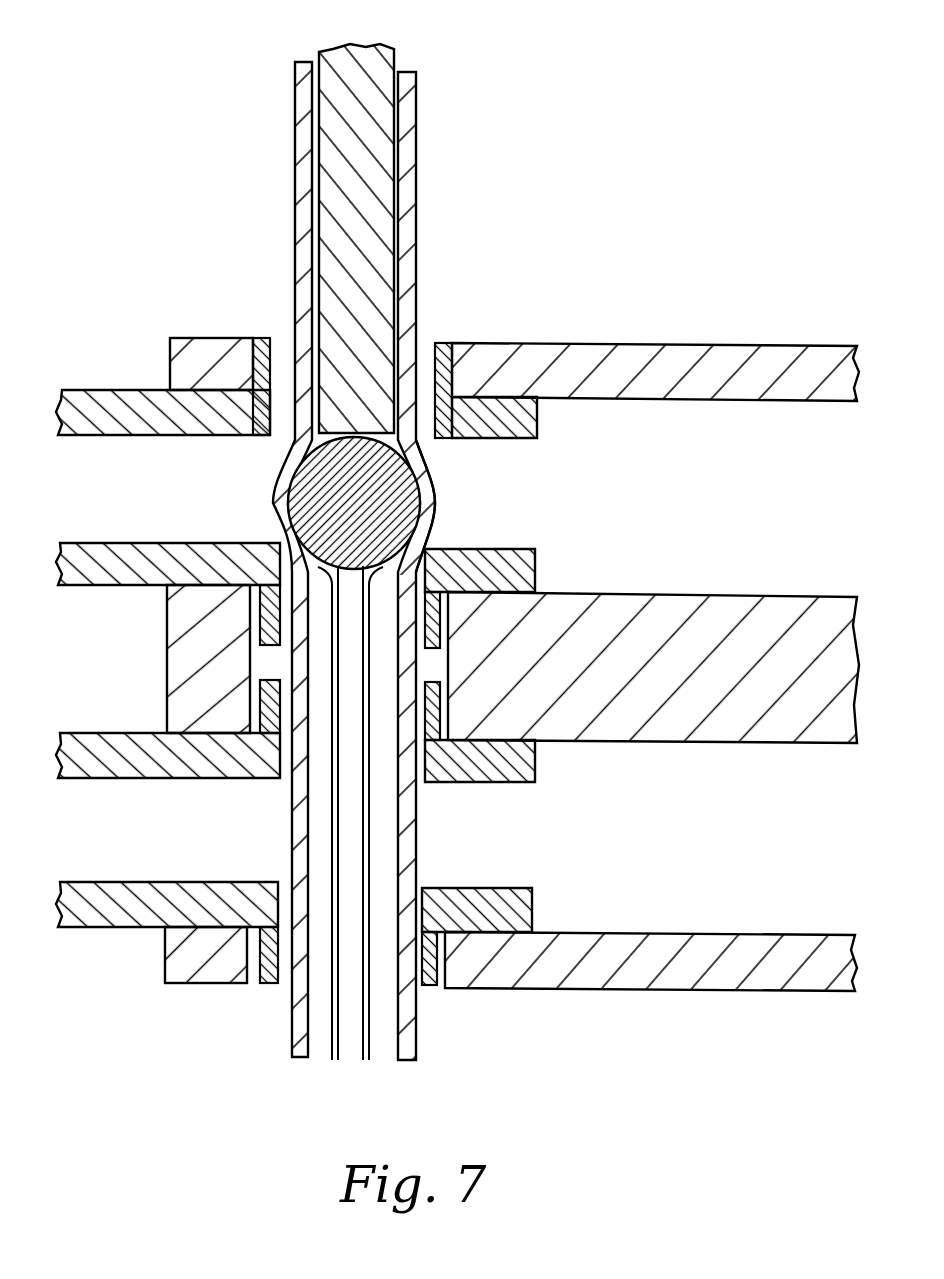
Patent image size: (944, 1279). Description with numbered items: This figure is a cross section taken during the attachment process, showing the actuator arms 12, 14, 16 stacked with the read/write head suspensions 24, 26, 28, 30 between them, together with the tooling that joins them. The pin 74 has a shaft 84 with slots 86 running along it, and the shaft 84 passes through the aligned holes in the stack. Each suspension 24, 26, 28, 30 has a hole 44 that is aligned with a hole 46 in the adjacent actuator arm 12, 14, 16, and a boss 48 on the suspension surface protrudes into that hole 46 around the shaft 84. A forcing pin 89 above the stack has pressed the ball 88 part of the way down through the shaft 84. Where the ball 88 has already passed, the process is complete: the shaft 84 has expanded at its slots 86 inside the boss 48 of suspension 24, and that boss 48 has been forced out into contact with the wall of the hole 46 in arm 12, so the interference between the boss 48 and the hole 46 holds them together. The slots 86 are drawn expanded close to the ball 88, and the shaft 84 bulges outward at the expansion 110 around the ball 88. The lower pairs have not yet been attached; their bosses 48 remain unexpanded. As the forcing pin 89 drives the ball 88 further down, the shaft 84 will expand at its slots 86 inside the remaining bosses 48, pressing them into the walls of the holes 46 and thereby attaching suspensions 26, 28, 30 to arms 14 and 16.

The actuator arm 12 is at (651, 341).
The actuator arm 14 is at (693, 591).
The actuator arm 16 is at (701, 931).
The read/write head suspension member 24 is at (540, 437).
The read/write head suspension member 26 is at (539, 561).
The read/write head suspension member 28 is at (540, 770).
The read/write head suspension member 30 is at (536, 907).
The hole 44 is at (282, 417).
The hole 46 is at (238, 340).
The boss 48 is at (443, 343).
The pin 74 is at (424, 154).
The shaft 84 is at (418, 218).
The slots 86 is at (333, 844).
The ball 88 is at (296, 508).
The forcing pin 89 is at (393, 53).
The expansion of the shaft 110 is at (437, 478).